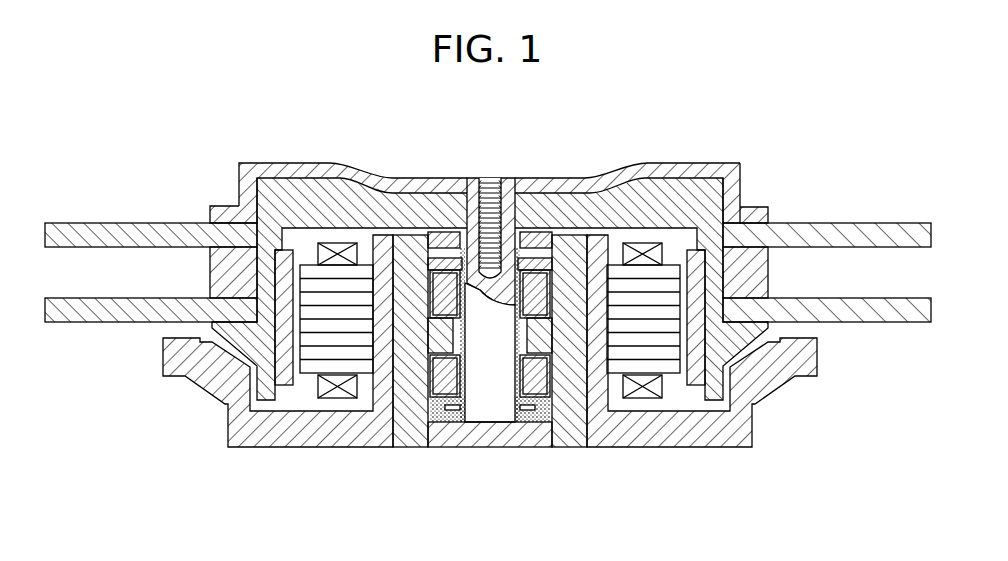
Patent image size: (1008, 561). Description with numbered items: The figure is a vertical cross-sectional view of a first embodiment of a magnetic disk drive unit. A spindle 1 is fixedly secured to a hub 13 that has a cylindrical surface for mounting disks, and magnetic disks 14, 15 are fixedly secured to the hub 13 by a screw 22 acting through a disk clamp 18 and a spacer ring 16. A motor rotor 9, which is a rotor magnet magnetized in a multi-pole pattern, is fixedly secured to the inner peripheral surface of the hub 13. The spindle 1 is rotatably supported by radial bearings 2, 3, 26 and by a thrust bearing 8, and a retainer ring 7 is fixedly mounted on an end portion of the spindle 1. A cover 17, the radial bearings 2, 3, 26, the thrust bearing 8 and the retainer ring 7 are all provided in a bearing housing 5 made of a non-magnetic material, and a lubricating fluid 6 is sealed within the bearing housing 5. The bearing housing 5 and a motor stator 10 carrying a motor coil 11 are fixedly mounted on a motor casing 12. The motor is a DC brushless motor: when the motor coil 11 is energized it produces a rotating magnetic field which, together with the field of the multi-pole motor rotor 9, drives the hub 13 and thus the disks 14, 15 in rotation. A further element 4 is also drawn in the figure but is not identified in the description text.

The spindle 1 is at (500, 415).
The radial bearing 2 is at (437, 302).
The radial bearing 3 is at (545, 392).
The spacer 4 is at (437, 338).
The bearing housing 5 is at (410, 247).
The lubricating fluid 6 is at (540, 410).
The retainer ring 7 is at (445, 400).
The thrust bearing 8 is at (472, 432).
The motor rotor 9 is at (695, 380).
The motor stator 10 is at (640, 357).
The motor coil 11 is at (648, 257).
The motor casing 12 is at (777, 377).
The hub 13 is at (715, 197).
The magnetic disk 14 is at (852, 225).
The magnetic disk 15 is at (853, 320).
The spacer ring 16 is at (753, 273).
The cover 17 is at (533, 237).
The disk clamp 18 is at (718, 168).
The screw 22 is at (487, 178).
The radial bearing 26 is at (448, 267).